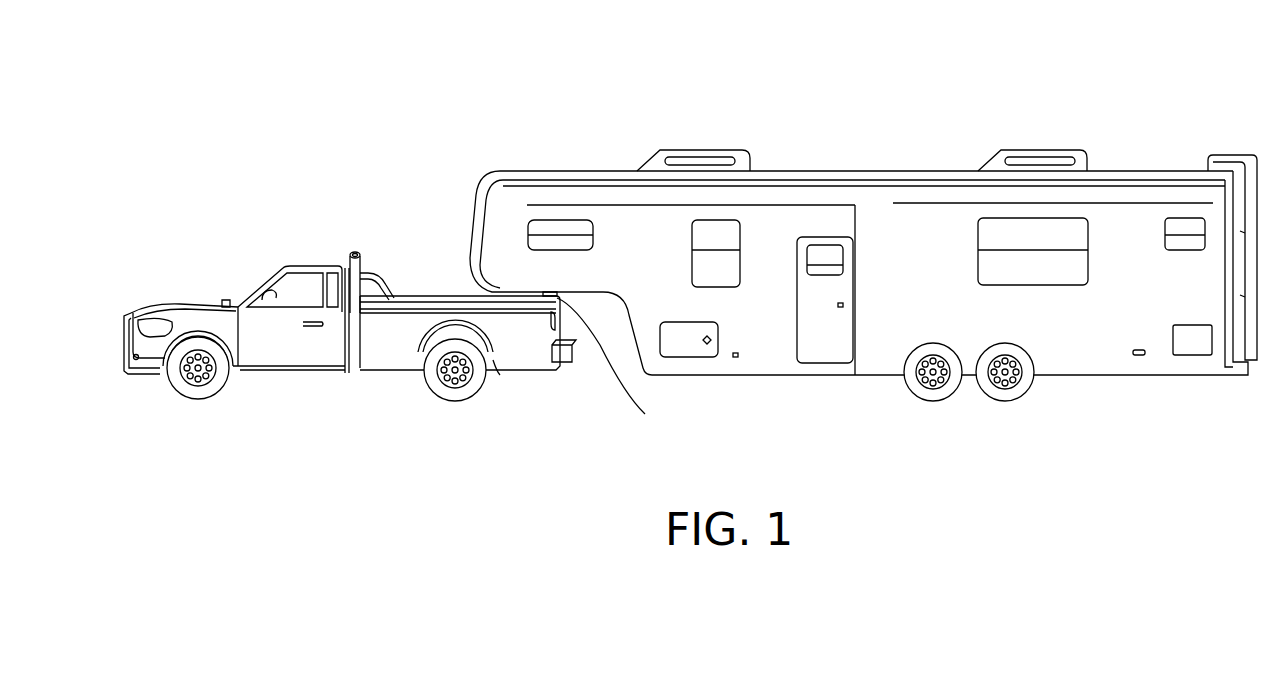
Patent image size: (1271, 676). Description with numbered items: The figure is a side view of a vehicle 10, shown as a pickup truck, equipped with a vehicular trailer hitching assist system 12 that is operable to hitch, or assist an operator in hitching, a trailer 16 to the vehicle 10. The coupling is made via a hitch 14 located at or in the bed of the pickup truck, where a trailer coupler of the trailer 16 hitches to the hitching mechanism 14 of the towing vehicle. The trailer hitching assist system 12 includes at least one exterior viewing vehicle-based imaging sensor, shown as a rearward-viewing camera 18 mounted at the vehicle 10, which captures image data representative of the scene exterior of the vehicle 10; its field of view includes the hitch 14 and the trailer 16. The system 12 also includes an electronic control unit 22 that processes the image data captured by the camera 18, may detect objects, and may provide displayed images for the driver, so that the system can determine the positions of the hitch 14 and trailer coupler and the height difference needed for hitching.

The vehicle 10 is at (103, 141).
The vehicular trailer hitching assist system 12 is at (382, 200).
The hitch 14 is at (645, 414).
The trailer 16 is at (725, 158).
The rearward-viewing camera 18 is at (350, 253).
The electronic control unit 22 is at (228, 259).